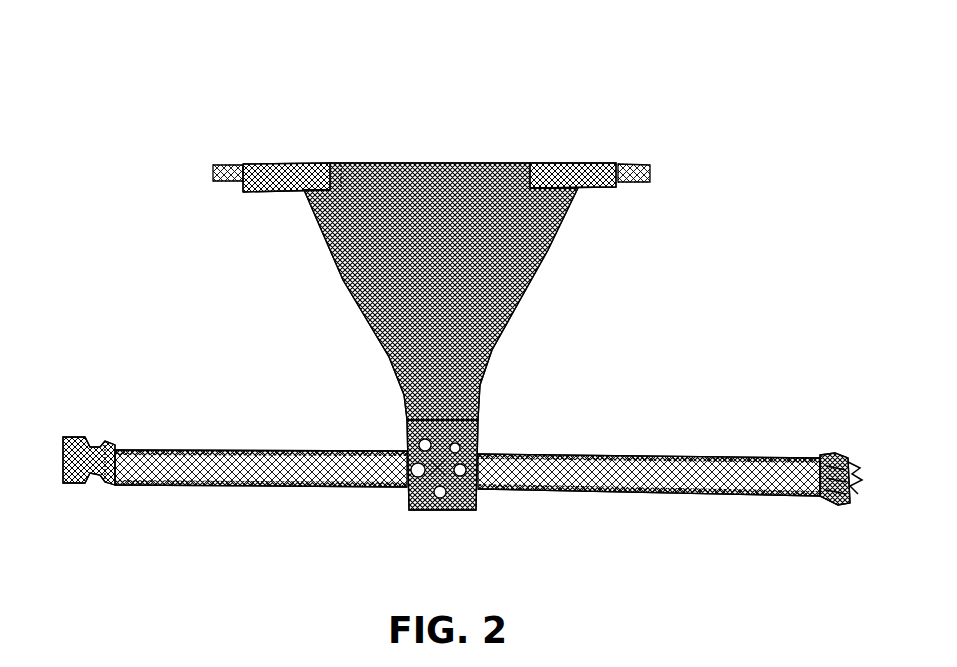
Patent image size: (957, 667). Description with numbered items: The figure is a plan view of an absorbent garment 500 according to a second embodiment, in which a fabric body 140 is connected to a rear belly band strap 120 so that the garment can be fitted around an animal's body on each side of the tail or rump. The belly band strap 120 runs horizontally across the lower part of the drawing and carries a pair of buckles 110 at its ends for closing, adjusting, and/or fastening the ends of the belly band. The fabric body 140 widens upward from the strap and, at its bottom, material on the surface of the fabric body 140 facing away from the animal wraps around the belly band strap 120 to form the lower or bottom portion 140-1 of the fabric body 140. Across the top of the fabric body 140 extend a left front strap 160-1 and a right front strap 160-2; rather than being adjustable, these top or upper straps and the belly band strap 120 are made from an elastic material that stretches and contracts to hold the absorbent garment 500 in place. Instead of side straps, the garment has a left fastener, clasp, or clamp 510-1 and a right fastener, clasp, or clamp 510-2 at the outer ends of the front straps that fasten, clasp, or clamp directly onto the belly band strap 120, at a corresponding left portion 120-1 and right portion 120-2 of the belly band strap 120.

The absorbent garment 500 is at (200, 103).
The buckle 110 is at (103, 478).
The belly band strap 120 is at (290, 487).
The left portion of belly band strap 120-1 is at (257, 457).
The right portion of belly band strap 120-2 is at (647, 455).
The fabric body 140 is at (516, 302).
The lower or bottom portion of fabric body 140-1 is at (472, 503).
The left front strap 160-1 is at (339, 192).
The right front strap 160-2 is at (528, 165).
The left fastener 510-1 is at (228, 178).
The right fastener 510-2 is at (640, 178).